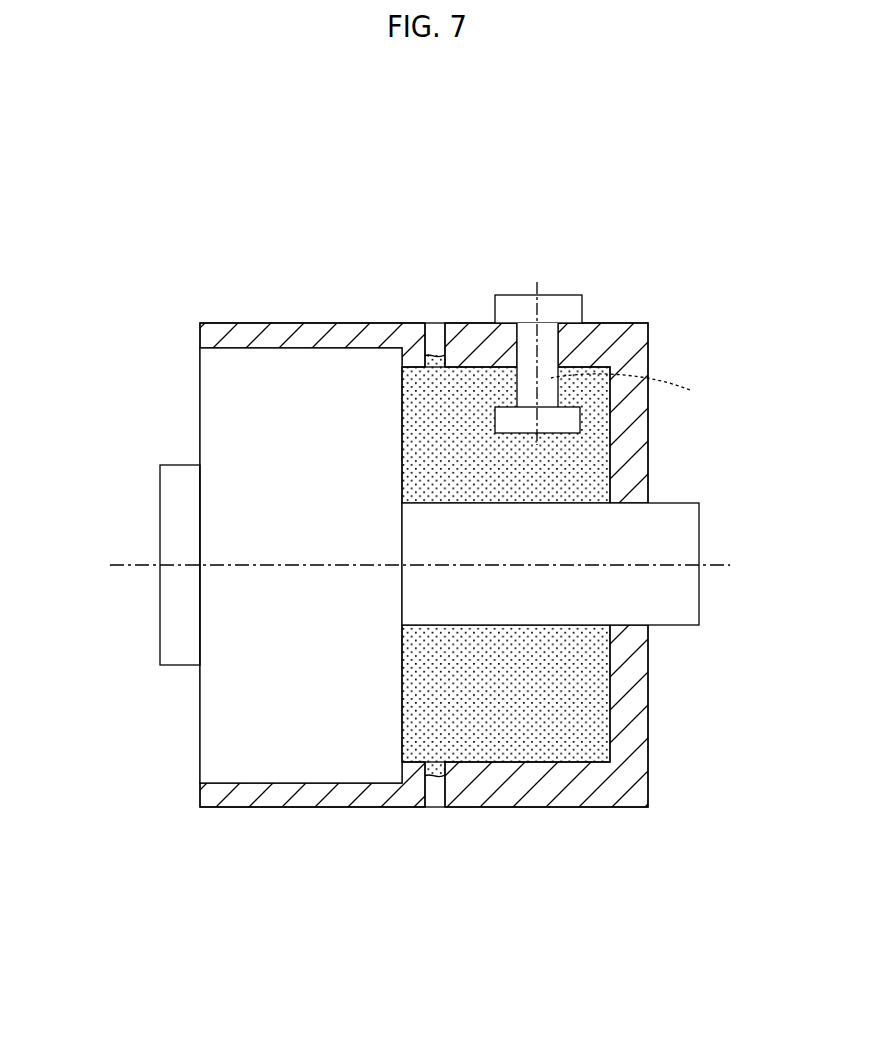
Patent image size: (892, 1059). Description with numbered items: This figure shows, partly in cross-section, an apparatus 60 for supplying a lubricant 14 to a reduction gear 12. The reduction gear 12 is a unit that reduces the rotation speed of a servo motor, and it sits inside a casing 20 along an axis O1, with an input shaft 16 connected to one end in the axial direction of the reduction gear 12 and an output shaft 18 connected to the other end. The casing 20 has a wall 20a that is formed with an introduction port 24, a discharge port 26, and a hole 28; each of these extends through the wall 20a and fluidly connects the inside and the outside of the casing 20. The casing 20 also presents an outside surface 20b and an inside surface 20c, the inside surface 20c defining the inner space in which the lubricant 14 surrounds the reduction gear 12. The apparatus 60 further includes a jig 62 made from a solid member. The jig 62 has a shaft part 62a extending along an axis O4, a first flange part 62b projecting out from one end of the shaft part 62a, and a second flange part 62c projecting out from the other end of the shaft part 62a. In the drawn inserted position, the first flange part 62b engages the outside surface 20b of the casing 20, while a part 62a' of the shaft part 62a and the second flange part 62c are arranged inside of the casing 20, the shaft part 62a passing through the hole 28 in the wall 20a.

The reduction gear 12 is at (250, 365).
The lubricant 14 is at (508, 703).
The input shaft 16 is at (685, 525).
The output shaft 18 is at (172, 475).
The casing 20 is at (487, 570).
The wall 20a is at (465, 333).
The outside surface 20b is at (302, 323).
The inside surface 20c is at (610, 680).
The introduction port 24 is at (435, 807).
The discharge port 26 is at (435, 323).
The hole 28 is at (548, 337).
The apparatus 60 is at (620, 338).
The jig 62 is at (608, 353).
The shaft part 62a is at (610, 365).
The part of the shaft part 62a' is at (643, 388).
The first flange part 62b is at (572, 307).
The second flange part 62c is at (567, 418).
The axis O1 is at (120, 565).
The axis O4 is at (540, 442).